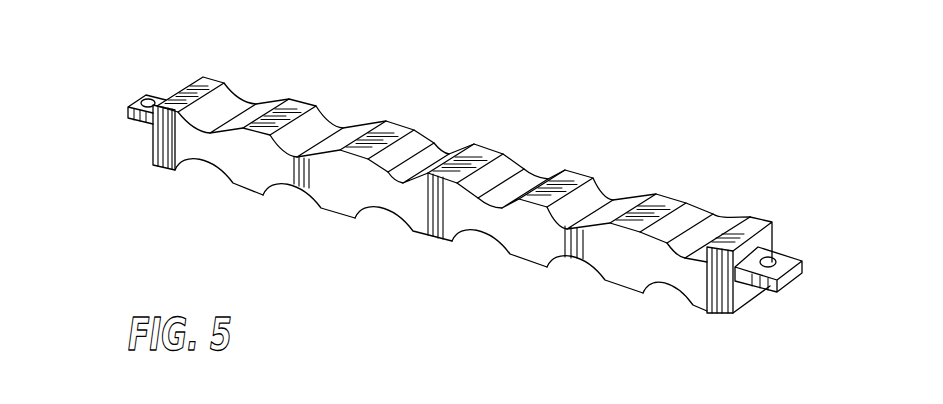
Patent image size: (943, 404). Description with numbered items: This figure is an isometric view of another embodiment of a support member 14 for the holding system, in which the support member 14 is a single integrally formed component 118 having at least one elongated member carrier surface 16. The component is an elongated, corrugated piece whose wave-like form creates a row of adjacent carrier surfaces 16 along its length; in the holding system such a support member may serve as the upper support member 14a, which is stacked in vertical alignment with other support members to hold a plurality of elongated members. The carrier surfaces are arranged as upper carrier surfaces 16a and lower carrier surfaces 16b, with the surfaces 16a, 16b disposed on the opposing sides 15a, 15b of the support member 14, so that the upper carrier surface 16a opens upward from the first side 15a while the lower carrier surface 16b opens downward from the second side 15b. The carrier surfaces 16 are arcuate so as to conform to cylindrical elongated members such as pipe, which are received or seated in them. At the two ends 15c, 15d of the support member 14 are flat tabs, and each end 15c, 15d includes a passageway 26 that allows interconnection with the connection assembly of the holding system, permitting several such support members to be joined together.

The support member 14 is at (441, 259).
The upper support member 14a is at (618, 180).
The opposing side of support member 15a is at (430, 98).
The opposing side of support member 15b is at (278, 215).
The end of support member 15c is at (138, 166).
The end of support member 15d is at (775, 304).
The elongated member carrier surface 16 is at (453, 152).
The upper carrier surface 16a is at (514, 165).
The lower carrier surface 16b is at (381, 216).
The passageway 26 is at (151, 100).
The single integrally formed component 118 is at (528, 269).